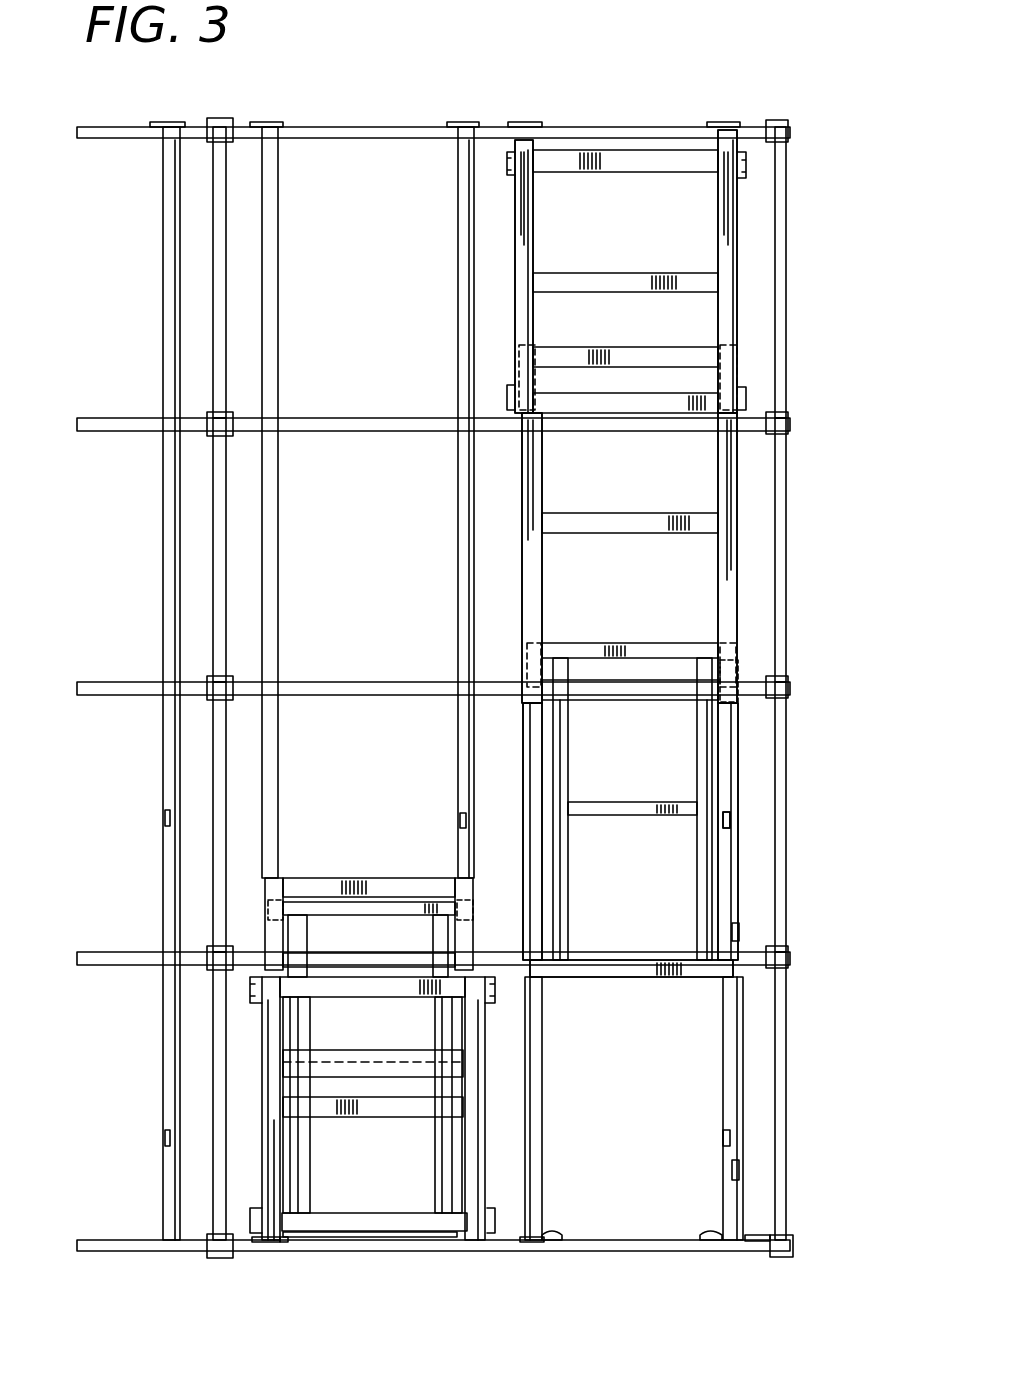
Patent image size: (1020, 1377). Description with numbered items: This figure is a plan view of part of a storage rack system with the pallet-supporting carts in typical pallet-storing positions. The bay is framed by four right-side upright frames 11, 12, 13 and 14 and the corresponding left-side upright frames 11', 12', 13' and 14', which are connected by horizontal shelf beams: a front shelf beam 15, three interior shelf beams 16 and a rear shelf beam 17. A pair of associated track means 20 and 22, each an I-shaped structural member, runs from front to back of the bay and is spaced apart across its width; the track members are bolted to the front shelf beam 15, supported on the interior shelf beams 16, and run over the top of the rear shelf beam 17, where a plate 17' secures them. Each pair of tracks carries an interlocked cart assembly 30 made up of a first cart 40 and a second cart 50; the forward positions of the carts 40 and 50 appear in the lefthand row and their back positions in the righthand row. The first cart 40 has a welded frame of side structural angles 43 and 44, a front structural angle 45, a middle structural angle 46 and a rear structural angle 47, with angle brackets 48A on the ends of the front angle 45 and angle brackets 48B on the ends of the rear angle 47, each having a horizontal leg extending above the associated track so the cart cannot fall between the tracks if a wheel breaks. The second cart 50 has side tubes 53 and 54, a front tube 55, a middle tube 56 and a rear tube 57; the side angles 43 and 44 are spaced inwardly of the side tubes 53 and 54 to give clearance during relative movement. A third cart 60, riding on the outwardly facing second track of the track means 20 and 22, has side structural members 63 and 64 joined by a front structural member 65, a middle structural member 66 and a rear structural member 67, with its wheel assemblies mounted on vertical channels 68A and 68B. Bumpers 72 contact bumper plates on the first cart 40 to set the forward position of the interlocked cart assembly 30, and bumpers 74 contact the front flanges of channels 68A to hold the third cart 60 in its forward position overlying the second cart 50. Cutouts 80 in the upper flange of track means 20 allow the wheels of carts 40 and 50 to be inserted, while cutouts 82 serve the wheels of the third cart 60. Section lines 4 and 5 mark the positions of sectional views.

The section line 4- 4 is at (483, 65).
The section line 5- 5 is at (508, 973).
The upright frame 11 is at (815, 1101).
The upright frame 11' is at (164, 1102).
The upright frame 12 is at (821, 814).
The upright frame 12' is at (160, 814).
The upright frame 13 is at (809, 547).
The upright frame 13' is at (162, 547).
The upright frame 14 is at (821, 269).
The upright frame 14' is at (160, 268).
The front shelf beam 15 is at (405, 1252).
The interior shelf beam 16 is at (378, 424).
The rear shelf beam 17 is at (433, 105).
The plate 17' is at (448, 94).
The track means 20 is at (462, 522).
The track means 22 is at (280, 568).
The interlocked cart assembly 30 is at (740, 665).
The first cart 40 is at (745, 768).
The side structural angle 43 is at (562, 906).
The side structural angle 44 is at (705, 918).
The front structural angle 45 is at (590, 968).
The middle structural angle 46 is at (642, 808).
The rear structural angle 47 is at (602, 655).
The angle bracket 48A is at (722, 972).
The angle bracket 48B is at (724, 650).
The second cart 50 is at (740, 505).
The side tube 53 is at (540, 500).
The side tube 54 is at (720, 573).
The front tube 55 is at (598, 700).
The middle tube 56 is at (630, 520).
The rear tube 57 is at (660, 357).
The third cart 60 is at (738, 215).
The side structural member 63 is at (526, 236).
The side structural member 64 is at (720, 236).
The front structural member 65 is at (592, 398).
The middle structural member 66 is at (628, 288).
The rear structural member 67 is at (596, 170).
The vertical channel 68A is at (513, 388).
The vertical channel 68B is at (747, 162).
The bumper 72 is at (290, 1243).
The bumper 74 is at (260, 1242).
The cutout 80 is at (735, 818).
The cutout 82 is at (740, 935).